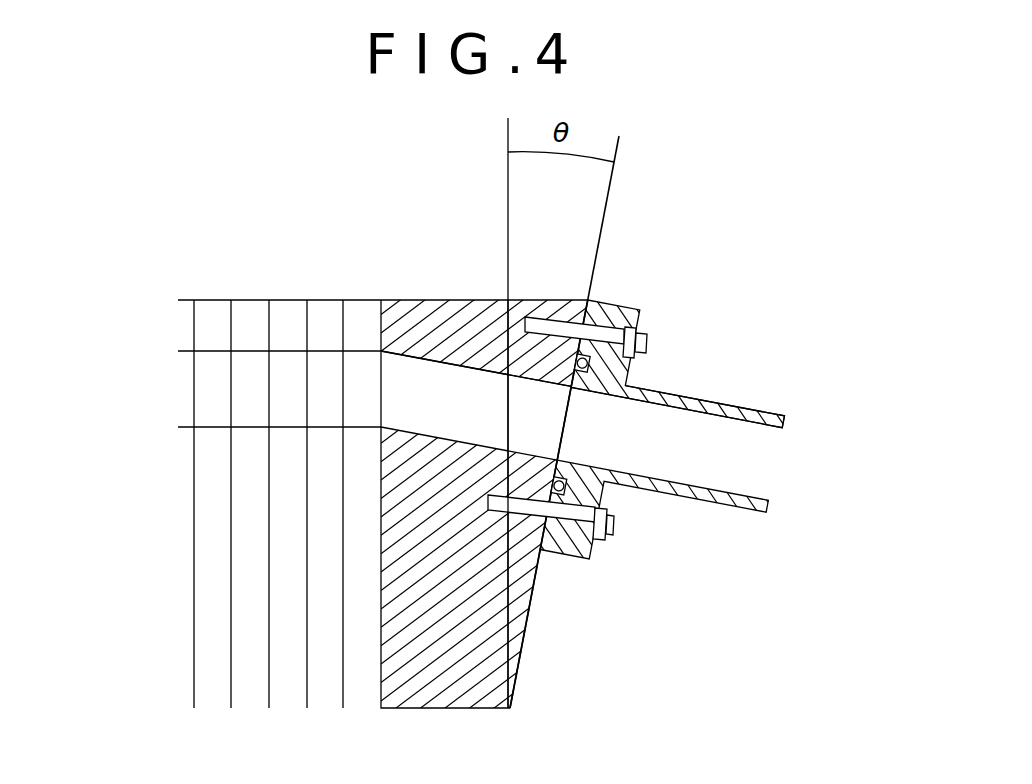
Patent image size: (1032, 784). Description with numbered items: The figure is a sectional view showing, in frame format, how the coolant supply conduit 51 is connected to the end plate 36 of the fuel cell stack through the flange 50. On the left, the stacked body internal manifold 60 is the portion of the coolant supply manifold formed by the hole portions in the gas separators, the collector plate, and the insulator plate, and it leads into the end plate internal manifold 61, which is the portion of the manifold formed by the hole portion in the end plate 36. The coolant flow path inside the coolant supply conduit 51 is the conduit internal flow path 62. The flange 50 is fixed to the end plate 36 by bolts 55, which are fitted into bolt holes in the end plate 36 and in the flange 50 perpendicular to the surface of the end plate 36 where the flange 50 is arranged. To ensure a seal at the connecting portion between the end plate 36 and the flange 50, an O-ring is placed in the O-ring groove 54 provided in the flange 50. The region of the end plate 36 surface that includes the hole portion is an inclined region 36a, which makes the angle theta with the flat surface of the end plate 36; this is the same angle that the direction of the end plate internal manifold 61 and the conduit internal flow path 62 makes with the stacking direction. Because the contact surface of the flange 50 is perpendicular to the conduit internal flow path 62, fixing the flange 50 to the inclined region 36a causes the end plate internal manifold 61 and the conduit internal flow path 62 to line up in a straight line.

The end plate 36 is at (478, 300).
The inclined region 36a is at (523, 612).
The flange 50 is at (610, 310).
The coolant supply conduit 51 is at (697, 502).
The O-ring groove 54 is at (588, 365).
The bolts 55 is at (640, 312).
The stacked body internal manifold 60 is at (247, 366).
The end plate internal manifold 61 is at (418, 375).
The conduit internal flow path 62 is at (747, 440).